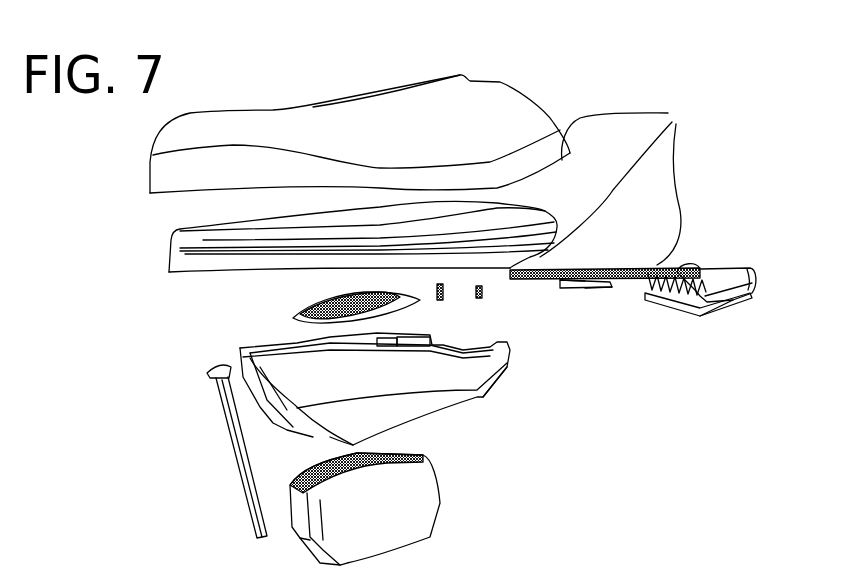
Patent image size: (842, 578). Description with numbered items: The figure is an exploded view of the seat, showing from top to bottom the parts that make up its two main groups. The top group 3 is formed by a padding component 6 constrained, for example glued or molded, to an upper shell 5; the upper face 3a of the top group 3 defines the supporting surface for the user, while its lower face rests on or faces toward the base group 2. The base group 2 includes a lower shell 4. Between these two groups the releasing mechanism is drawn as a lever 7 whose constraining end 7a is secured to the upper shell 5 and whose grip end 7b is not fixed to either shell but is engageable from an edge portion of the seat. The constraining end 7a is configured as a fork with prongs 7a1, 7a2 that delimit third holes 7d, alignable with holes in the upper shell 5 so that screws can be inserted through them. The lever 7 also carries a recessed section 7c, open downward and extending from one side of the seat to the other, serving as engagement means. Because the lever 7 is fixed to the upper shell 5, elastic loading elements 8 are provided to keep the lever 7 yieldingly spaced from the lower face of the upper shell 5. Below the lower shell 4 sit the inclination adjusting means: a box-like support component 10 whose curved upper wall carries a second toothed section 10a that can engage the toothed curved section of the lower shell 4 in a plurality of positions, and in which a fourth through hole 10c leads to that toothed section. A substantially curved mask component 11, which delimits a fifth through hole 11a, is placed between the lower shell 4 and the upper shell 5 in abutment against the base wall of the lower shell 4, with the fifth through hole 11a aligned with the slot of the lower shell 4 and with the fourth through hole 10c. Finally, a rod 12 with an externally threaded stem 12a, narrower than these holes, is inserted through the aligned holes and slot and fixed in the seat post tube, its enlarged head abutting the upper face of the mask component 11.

The base group 2 is at (298, 310).
The top group 3 is at (613, 181).
The upper face 3a is at (367, 96).
The lower shell 4 is at (508, 380).
The upper shell 5 is at (552, 218).
The padding component 6 is at (540, 108).
The lever 7 is at (730, 303).
The constraining end 7a is at (597, 282).
The prong 7a1 is at (583, 281).
The prong 7a2 is at (532, 280).
The grip end 7b is at (746, 268).
The recessed section 7c is at (670, 300).
The third holes 7d is at (590, 262).
The elastic loading element 8 is at (441, 300).
The support component 10 is at (437, 508).
The second toothed section 10a is at (360, 446).
The fourth through hole 10c is at (353, 445).
The mask component 11 is at (308, 298).
The fifth through hole 11a is at (327, 298).
The rod 12 is at (215, 378).
The stem 12a is at (243, 493).